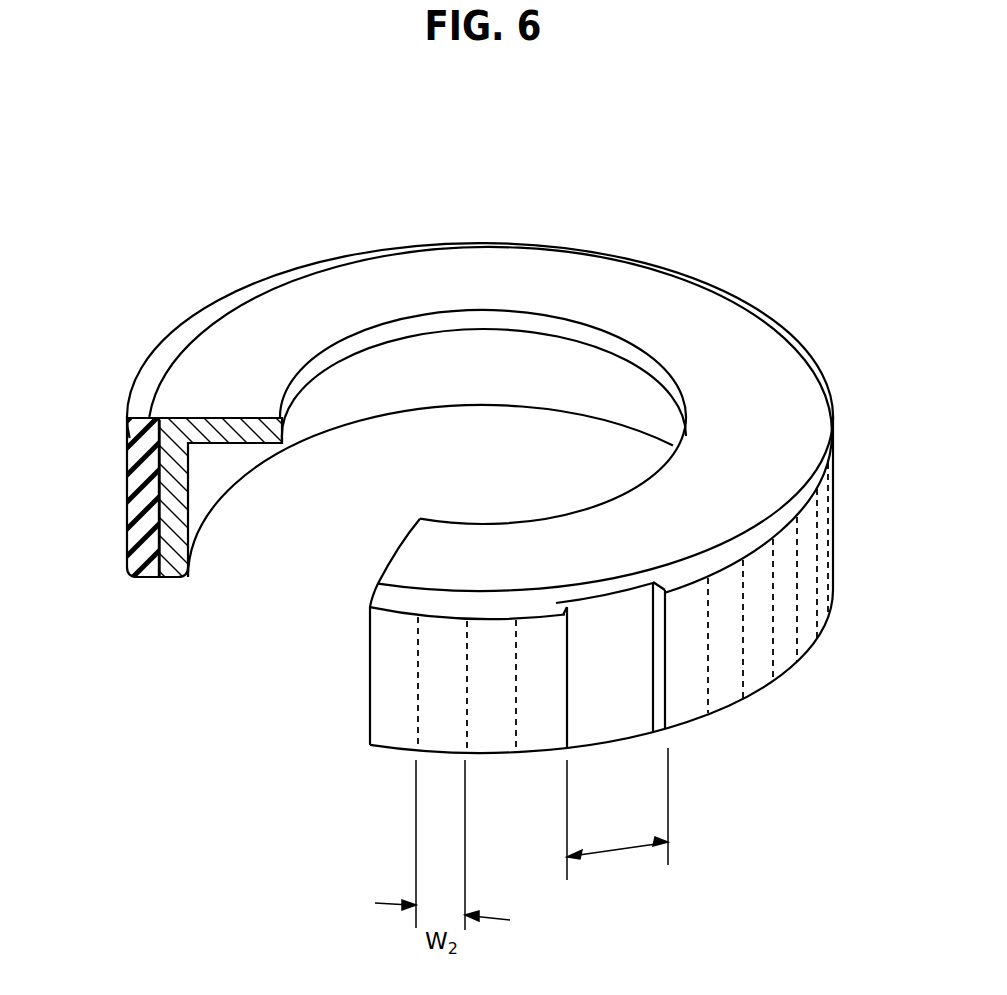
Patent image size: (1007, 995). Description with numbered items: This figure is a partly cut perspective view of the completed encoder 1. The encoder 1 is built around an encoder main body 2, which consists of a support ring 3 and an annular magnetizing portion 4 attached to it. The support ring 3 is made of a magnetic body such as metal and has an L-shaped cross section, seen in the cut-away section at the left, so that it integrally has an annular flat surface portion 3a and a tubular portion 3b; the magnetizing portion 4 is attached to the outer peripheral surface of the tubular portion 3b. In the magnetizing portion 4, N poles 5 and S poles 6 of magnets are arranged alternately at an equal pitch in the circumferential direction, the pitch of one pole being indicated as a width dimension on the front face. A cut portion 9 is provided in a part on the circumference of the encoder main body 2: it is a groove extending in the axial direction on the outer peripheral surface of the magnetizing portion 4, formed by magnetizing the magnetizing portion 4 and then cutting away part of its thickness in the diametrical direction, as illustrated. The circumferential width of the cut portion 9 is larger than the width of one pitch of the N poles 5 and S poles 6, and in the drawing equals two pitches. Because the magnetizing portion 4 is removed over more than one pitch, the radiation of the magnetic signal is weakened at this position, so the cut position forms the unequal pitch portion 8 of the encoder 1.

The encoder 1 is at (713, 255).
The encoder main body 2 is at (486, 262).
The support ring 3 is at (343, 444).
The annular flat surface portion 3a is at (229, 445).
The tubular portion 3b is at (173, 558).
The magnetizing portion 4 is at (137, 516).
The N poles 5 is at (386, 727).
The S poles 6 is at (445, 733).
The unequal pitch portion 8 is at (587, 741).
The cut portion 9 is at (623, 712).